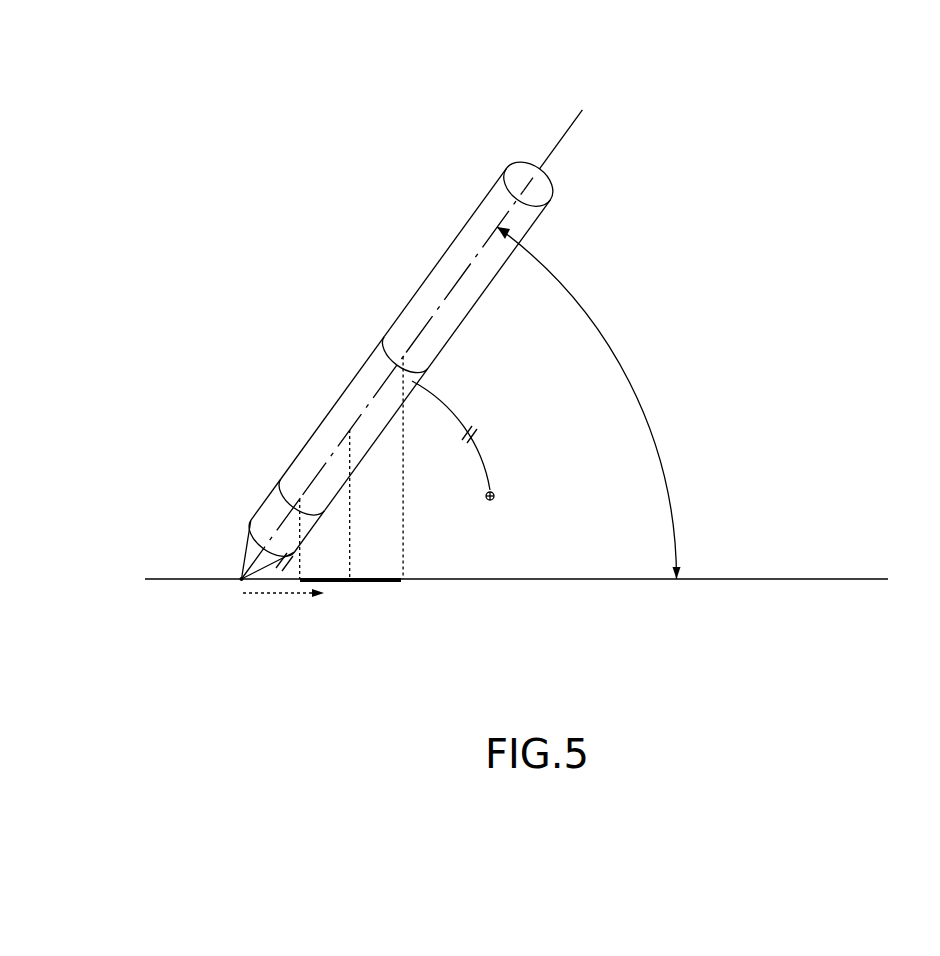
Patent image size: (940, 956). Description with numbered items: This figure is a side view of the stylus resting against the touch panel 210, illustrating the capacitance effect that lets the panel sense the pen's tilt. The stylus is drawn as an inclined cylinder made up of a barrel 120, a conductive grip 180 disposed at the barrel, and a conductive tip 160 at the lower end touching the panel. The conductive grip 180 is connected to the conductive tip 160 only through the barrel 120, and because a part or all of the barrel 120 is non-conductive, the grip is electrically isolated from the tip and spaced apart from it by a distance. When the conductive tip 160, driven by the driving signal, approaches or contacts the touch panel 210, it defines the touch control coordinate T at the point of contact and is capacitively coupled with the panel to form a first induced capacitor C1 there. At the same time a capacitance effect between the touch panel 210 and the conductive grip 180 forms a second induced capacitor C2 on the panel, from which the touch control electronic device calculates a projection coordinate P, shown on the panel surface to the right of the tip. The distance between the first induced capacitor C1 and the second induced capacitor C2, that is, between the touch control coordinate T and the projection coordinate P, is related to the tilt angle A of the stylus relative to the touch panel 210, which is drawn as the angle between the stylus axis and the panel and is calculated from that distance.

The barrel 120 is at (450, 267).
The conductive grip 180 is at (340, 423).
The conductive tip 160 is at (247, 548).
The touch panel 210 is at (840, 577).
The touch control coordinate T is at (240, 582).
The projection coordinate P is at (332, 582).
The tilt angle A is at (588, 403).
The first induced capacitor C1 is at (290, 553).
The second induced capacitor C2 is at (467, 433).